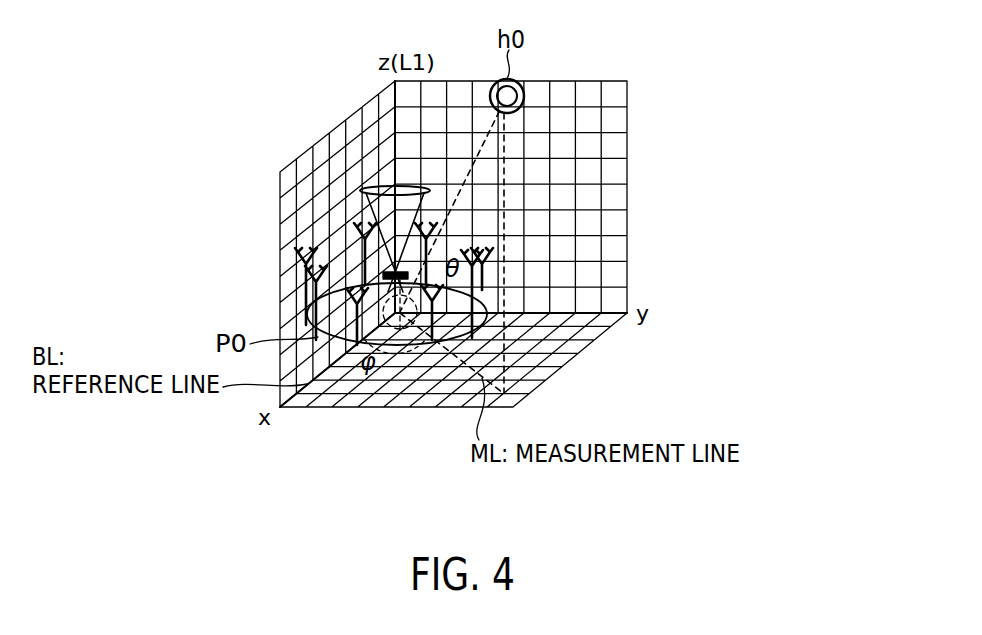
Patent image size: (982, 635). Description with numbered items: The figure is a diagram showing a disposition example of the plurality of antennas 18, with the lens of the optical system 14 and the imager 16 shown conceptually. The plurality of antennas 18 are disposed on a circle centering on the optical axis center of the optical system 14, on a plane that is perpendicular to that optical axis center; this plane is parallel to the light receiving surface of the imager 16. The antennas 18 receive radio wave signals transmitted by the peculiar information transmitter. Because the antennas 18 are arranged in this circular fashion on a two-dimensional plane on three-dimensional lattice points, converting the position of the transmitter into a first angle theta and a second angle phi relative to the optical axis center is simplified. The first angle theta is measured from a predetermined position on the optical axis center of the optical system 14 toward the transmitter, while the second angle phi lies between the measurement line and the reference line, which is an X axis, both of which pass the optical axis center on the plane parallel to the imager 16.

The optical system 14 is at (372, 186).
The imager 16 is at (412, 275).
The antennas 18 is at (297, 267).